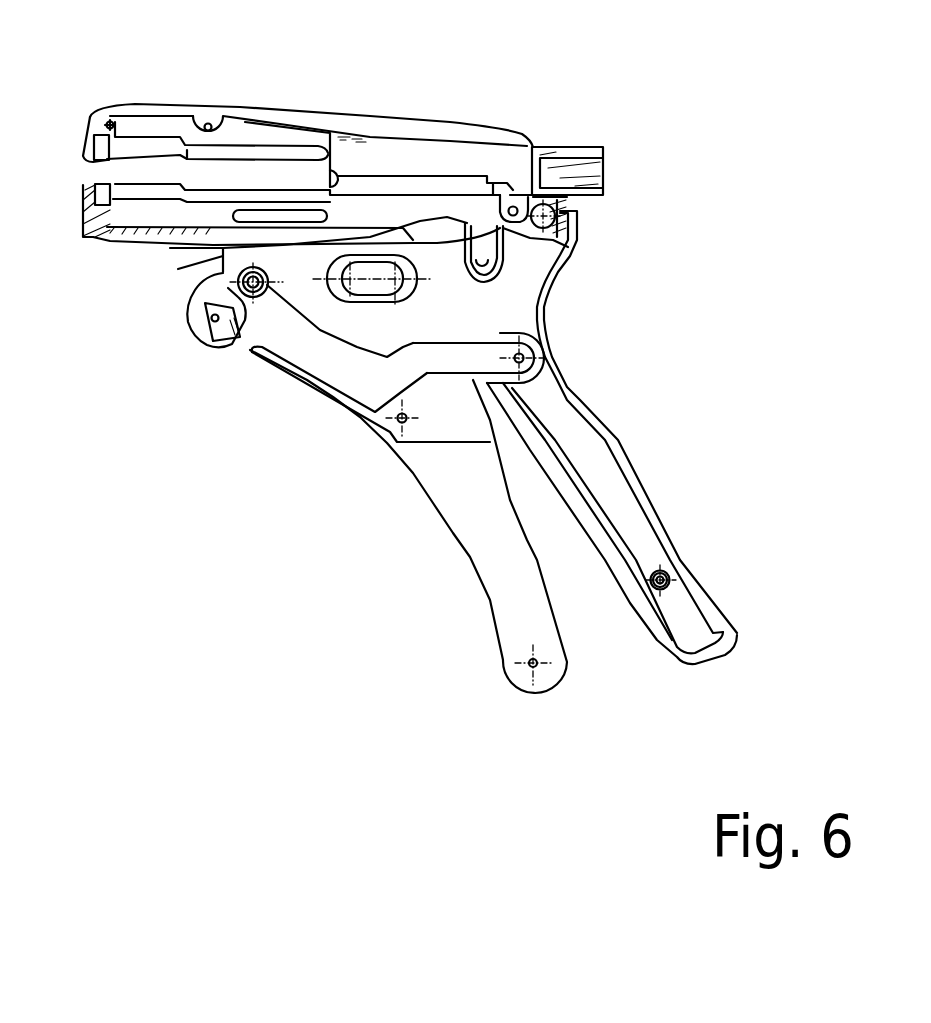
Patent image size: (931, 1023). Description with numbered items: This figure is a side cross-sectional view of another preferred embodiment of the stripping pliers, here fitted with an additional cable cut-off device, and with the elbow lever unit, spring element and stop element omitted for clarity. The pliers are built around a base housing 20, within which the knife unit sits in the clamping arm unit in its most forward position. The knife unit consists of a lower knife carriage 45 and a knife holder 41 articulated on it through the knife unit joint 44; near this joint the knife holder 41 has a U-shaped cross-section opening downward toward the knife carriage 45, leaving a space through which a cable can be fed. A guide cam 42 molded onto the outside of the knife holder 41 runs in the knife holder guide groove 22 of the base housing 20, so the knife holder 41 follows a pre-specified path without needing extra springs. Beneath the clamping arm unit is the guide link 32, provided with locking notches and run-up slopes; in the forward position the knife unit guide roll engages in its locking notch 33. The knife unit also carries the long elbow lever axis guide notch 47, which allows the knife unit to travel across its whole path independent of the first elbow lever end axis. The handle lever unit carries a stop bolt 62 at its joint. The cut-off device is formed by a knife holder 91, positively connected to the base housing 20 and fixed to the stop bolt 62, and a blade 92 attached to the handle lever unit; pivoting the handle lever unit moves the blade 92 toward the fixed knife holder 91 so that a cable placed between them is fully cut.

The base housing 20 is at (545, 297).
The knife holder guide groove 22 is at (142, 132).
The guide link 32 is at (227, 273).
The locking notch 33 is at (547, 253).
The knife holder 41 is at (376, 161).
The guide cam 42 is at (205, 125).
The knife unit joint 44 is at (517, 200).
The knife carriage 45 is at (440, 208).
The elbow lever axis guide notch 47 is at (270, 213).
The stop bolt 62 is at (215, 287).
The knife holder 91 is at (427, 373).
The blade 92 is at (210, 339).